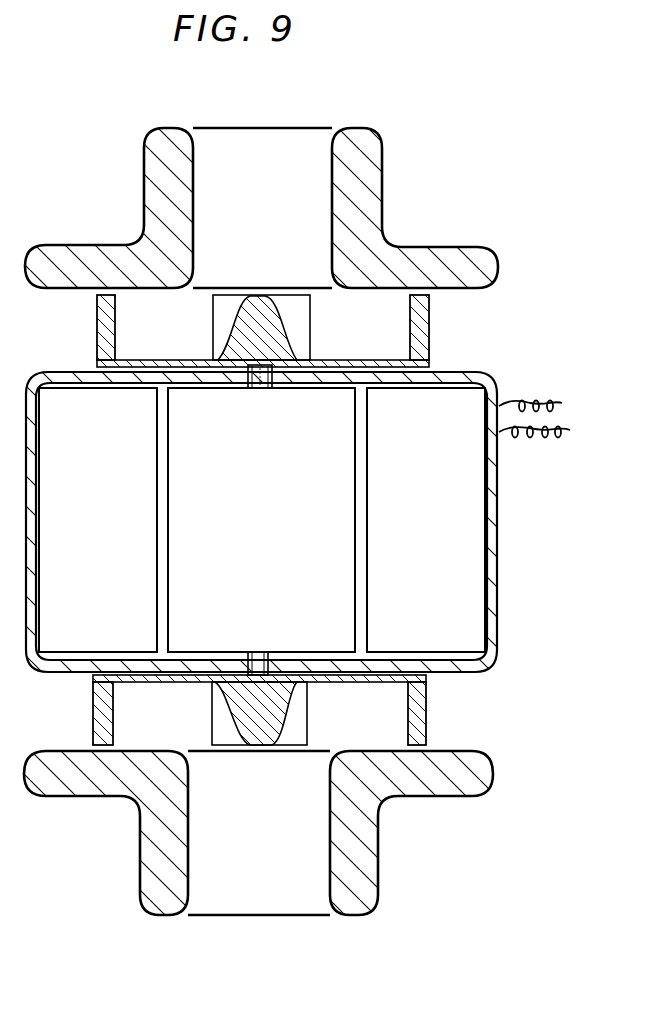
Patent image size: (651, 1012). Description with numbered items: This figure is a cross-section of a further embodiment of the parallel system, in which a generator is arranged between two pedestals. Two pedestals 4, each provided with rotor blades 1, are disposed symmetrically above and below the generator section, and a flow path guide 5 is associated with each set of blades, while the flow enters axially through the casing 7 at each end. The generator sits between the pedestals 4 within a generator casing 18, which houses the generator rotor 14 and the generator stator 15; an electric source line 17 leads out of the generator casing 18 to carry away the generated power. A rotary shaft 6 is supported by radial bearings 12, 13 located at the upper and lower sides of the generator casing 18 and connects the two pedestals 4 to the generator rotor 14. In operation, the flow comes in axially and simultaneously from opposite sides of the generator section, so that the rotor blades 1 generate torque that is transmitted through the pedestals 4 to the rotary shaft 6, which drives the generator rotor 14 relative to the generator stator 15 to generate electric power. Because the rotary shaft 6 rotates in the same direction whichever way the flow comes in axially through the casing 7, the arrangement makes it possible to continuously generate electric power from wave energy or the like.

The rotor blade 1 is at (97, 312).
The pedestal 4 is at (383, 361).
The flow path guide 5 is at (272, 332).
The rotary shaft 6 is at (255, 653).
The casing 7 is at (377, 177).
The radial bearing 12 is at (248, 386).
The radial bearing 13 is at (272, 672).
The generator rotor 14 is at (343, 606).
The generator stator 15 is at (470, 555).
The electric source line 17 is at (553, 413).
The generator casing 18 is at (493, 511).